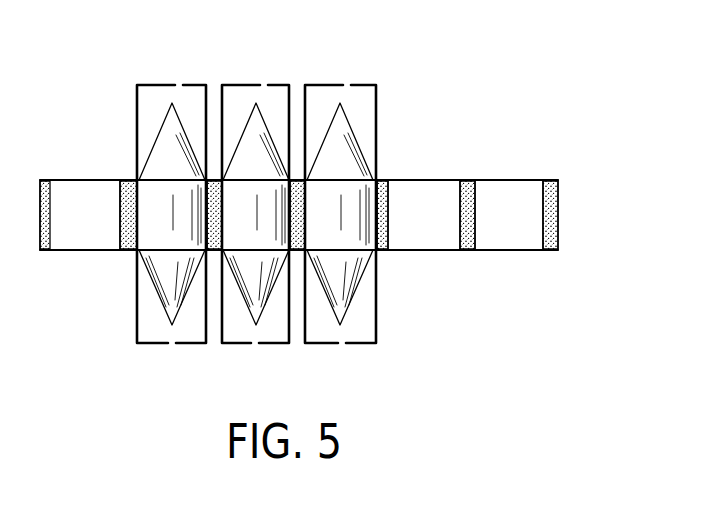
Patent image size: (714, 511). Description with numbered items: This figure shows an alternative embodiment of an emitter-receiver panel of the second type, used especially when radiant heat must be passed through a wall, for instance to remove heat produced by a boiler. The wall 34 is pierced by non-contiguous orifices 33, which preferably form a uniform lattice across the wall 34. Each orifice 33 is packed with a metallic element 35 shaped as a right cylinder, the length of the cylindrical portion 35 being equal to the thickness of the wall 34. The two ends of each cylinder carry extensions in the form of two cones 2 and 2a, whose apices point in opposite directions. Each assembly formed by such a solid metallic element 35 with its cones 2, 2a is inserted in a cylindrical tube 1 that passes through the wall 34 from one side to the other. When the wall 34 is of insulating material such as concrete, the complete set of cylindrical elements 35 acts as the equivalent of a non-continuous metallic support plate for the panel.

The cylindrical tube 1 is at (136, 97).
The cone 2 is at (255, 117).
The cone 2a is at (167, 297).
The orifice 33 is at (450, 243).
The wall 34 is at (470, 181).
The metallic element 35 is at (162, 222).